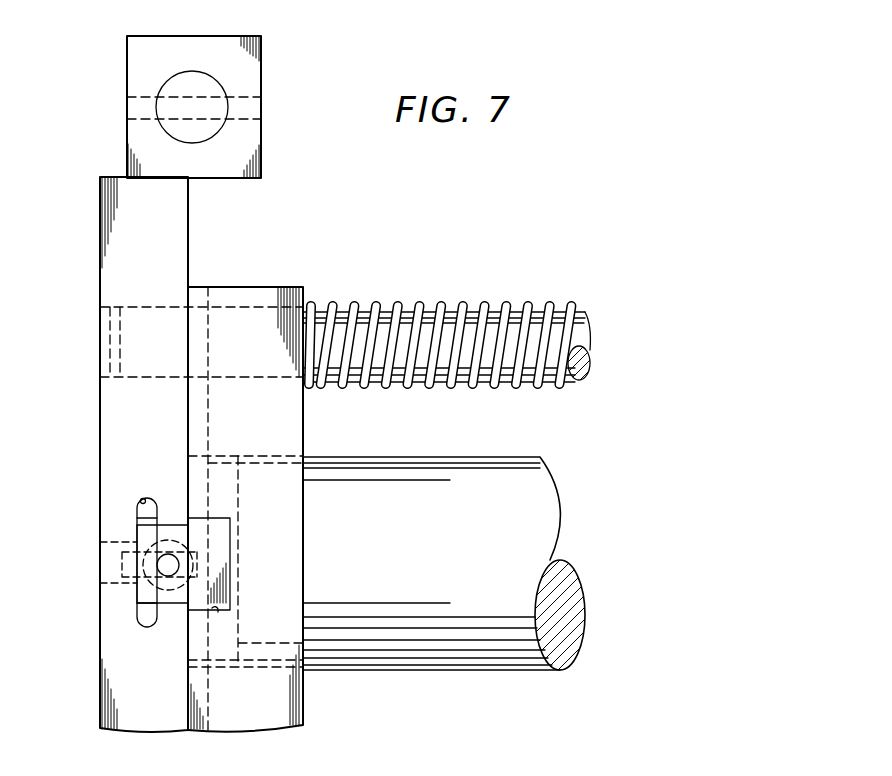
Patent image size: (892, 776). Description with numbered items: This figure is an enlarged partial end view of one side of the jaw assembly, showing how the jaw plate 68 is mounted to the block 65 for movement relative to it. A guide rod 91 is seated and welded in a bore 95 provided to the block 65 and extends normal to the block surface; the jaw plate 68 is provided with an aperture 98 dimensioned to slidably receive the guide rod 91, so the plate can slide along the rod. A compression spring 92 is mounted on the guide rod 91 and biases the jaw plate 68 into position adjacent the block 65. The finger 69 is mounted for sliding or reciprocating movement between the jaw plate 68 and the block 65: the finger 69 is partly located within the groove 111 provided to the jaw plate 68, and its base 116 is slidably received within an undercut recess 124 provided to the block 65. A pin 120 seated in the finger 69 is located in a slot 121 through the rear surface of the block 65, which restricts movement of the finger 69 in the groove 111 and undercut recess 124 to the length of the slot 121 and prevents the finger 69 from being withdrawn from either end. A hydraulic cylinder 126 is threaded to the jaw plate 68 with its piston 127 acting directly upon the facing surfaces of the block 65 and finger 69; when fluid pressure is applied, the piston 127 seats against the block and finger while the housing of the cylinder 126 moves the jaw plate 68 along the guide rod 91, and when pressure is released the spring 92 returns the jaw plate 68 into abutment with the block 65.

The block 65 is at (100, 227).
The jaw plate 68 is at (258, 287).
The finger 69 is at (147, 592).
The guide rod 91 is at (498, 305).
The compression spring 92 is at (427, 305).
The bore 95 is at (132, 312).
The aperture 98 is at (250, 375).
The groove 111 is at (217, 612).
The base 116 is at (143, 518).
The pin 120 is at (122, 565).
The slot 121 is at (100, 547).
The undercut recess 124 is at (141, 500).
The hydraulic cylinder 126 is at (482, 670).
The piston 127 is at (320, 643).